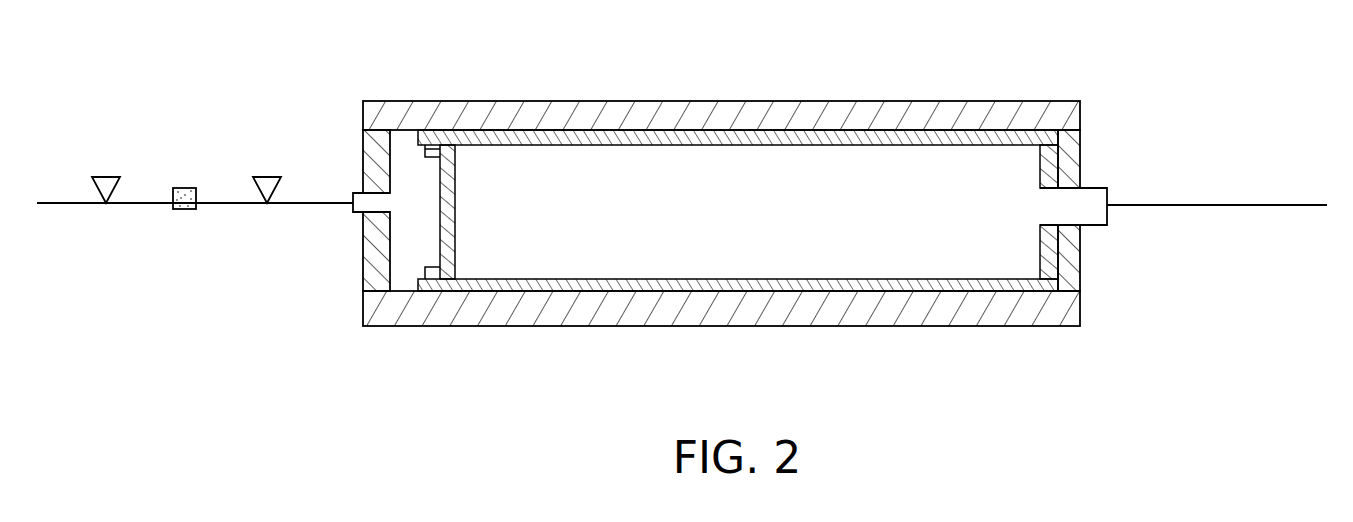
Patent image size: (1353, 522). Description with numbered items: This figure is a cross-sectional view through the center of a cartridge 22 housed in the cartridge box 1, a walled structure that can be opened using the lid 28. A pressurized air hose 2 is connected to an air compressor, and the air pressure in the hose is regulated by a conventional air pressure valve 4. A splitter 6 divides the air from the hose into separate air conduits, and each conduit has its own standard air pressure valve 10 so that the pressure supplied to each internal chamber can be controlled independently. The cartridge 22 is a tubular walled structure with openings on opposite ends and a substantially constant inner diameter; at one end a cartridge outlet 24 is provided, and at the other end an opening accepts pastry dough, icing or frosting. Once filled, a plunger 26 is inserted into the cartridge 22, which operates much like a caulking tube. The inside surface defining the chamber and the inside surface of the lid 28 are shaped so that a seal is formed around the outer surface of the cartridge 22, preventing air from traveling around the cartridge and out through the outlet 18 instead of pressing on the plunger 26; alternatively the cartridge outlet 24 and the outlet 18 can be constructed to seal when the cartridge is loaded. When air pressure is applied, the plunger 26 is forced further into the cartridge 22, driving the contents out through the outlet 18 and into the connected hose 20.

The cartridge box 1 is at (767, 327).
The pressurized air hose 2 is at (64, 203).
The air pressure valve 4 is at (106, 177).
The splitter 6 is at (183, 209).
The air pressure valve 10 is at (266, 177).
The outlet 18 is at (1097, 227).
The hose 20 is at (1243, 205).
The cartridge 22 is at (897, 137).
The cartridge outlet 24 is at (1063, 193).
The plunger 26 is at (455, 262).
The lid 28 is at (717, 110).